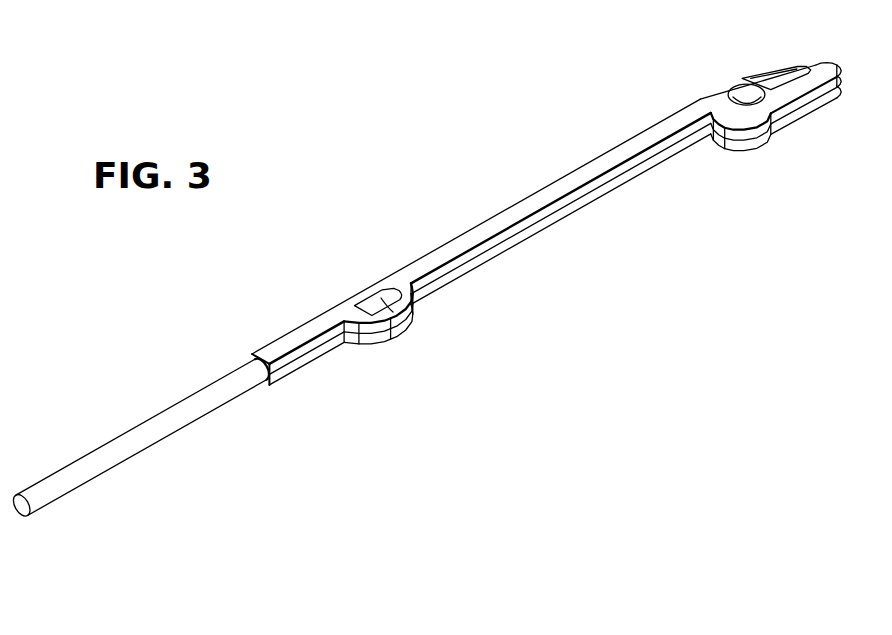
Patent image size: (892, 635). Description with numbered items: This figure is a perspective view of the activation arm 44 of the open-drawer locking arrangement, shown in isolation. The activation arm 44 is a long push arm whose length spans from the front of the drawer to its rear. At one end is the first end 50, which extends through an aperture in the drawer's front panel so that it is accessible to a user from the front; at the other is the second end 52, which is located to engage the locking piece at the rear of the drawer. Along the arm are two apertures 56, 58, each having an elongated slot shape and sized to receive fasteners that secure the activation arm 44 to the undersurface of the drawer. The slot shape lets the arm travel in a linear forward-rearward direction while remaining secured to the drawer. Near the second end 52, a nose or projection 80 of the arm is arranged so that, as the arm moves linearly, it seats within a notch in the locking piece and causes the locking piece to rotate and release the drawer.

The activation arm 44 is at (373, 179).
The first end 50 is at (165, 416).
The second end 52 is at (742, 78).
The aperture 56 is at (381, 297).
The aperture 58 is at (742, 88).
The nose or projection 80 is at (828, 63).